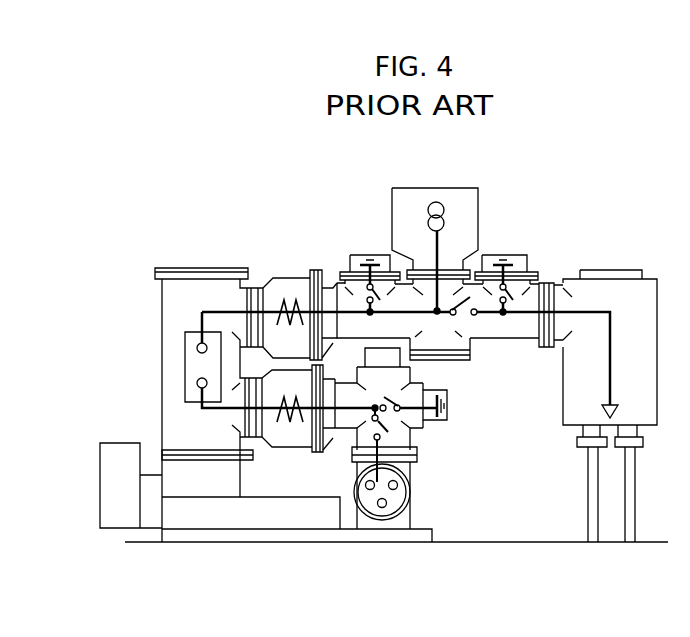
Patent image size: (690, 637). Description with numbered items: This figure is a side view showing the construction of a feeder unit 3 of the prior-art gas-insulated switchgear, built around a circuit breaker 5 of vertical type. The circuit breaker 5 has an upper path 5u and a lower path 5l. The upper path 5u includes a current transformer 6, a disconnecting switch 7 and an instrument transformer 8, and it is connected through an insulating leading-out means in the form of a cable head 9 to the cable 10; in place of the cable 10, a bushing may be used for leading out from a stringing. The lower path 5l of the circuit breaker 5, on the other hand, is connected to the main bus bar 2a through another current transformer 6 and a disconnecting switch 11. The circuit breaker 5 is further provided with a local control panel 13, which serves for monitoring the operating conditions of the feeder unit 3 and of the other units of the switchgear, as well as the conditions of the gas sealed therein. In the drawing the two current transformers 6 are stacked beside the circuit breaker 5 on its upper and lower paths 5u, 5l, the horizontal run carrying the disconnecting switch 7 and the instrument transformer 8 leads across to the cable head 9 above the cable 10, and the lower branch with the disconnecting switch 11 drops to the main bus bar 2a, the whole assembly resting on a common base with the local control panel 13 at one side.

The feeder unit 3 is at (573, 182).
The circuit breaker 5 is at (190, 330).
The upper path 5u is at (236, 298).
The lower path 5l is at (238, 398).
The current transformer 6 is at (293, 298).
The disconnecting switch 7 is at (477, 320).
The instrument transformer 8 is at (445, 220).
The cable head 9 is at (610, 295).
The cable 10 is at (636, 500).
The disconnecting switch 11 is at (410, 418).
The main bus bar 2a is at (412, 492).
The local control panel 13 is at (112, 453).